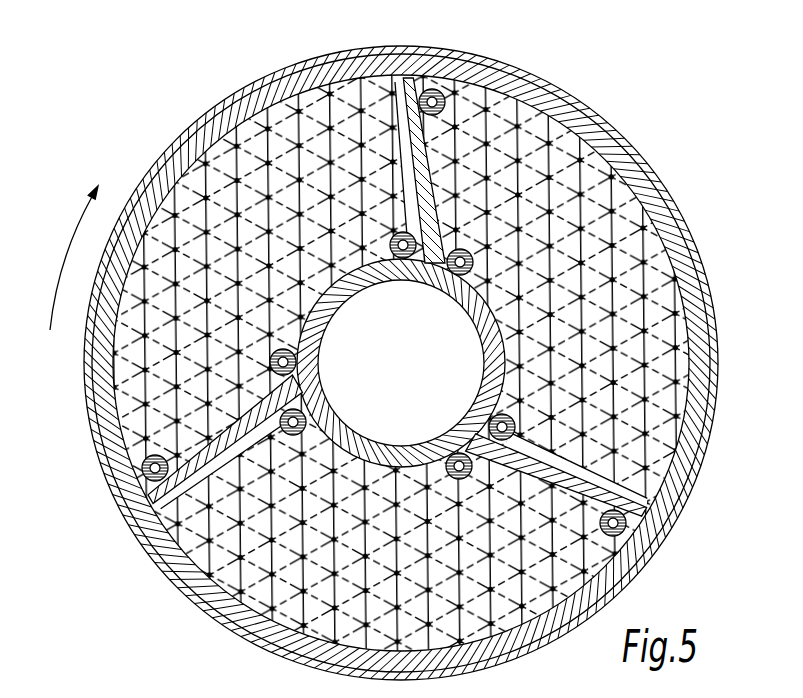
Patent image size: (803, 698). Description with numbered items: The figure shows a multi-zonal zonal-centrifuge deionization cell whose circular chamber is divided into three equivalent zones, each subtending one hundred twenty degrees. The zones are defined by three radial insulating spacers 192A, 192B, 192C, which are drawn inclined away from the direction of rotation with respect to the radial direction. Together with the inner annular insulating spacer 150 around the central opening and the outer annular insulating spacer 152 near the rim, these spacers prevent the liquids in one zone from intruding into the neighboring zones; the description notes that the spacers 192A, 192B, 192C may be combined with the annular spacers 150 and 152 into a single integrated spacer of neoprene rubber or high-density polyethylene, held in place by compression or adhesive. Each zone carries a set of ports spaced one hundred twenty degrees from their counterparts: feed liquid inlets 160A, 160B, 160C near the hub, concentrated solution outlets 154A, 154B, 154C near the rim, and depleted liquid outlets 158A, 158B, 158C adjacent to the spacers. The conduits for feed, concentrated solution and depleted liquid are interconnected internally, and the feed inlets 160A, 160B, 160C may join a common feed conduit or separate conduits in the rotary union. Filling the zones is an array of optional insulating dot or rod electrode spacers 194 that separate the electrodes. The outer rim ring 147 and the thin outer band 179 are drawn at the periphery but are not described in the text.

The outer rim ring 147 is at (628, 155).
The inner annular insulating spacer 150 is at (338, 432).
The outer annular insulating spacer 152 is at (302, 90).
The concentrated solution outlet 154A is at (443, 92).
The concentrated solution outlet 154B is at (625, 535).
The concentrated solution outlet 154C is at (147, 462).
The depleted liquid outlet 158A is at (405, 233).
The depleted liquid outlet 158B is at (500, 412).
The depleted liquid outlet 158C is at (290, 432).
The feed liquid inlet 160A is at (447, 256).
The feed liquid inlet 160B is at (456, 452).
The feed liquid inlet 160C is at (299, 332).
The outer thin band 179 is at (227, 140).
The insulating spacer 192A is at (436, 186).
The insulating spacer 192B is at (588, 480).
The insulating spacer 192C is at (257, 400).
The insulating dot or rod electrode spacers 194 is at (583, 266).